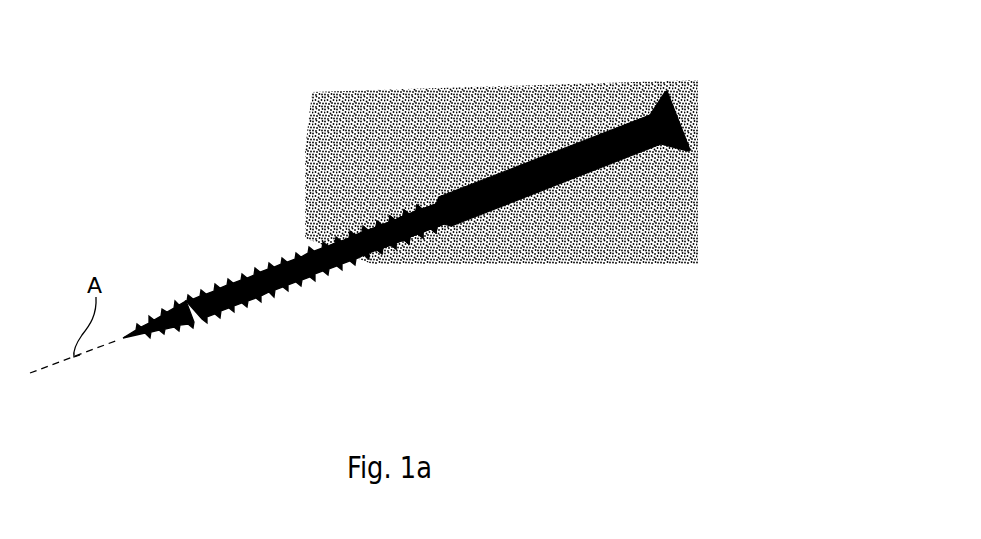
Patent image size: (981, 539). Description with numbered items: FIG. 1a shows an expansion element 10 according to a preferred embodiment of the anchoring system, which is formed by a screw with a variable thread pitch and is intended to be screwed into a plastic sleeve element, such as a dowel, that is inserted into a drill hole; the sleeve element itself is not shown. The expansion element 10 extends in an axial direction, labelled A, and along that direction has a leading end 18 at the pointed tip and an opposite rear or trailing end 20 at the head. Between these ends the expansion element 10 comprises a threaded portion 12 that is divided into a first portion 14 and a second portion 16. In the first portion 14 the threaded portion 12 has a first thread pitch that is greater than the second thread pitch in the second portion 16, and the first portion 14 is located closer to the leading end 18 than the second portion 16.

The expansion element 10 is at (283, 133).
The threaded portion 12 is at (373, 318).
The first portion 14 is at (221, 249).
The second portion 16 is at (391, 180).
The leading end 18 is at (112, 352).
The trailing end 20 is at (688, 103).